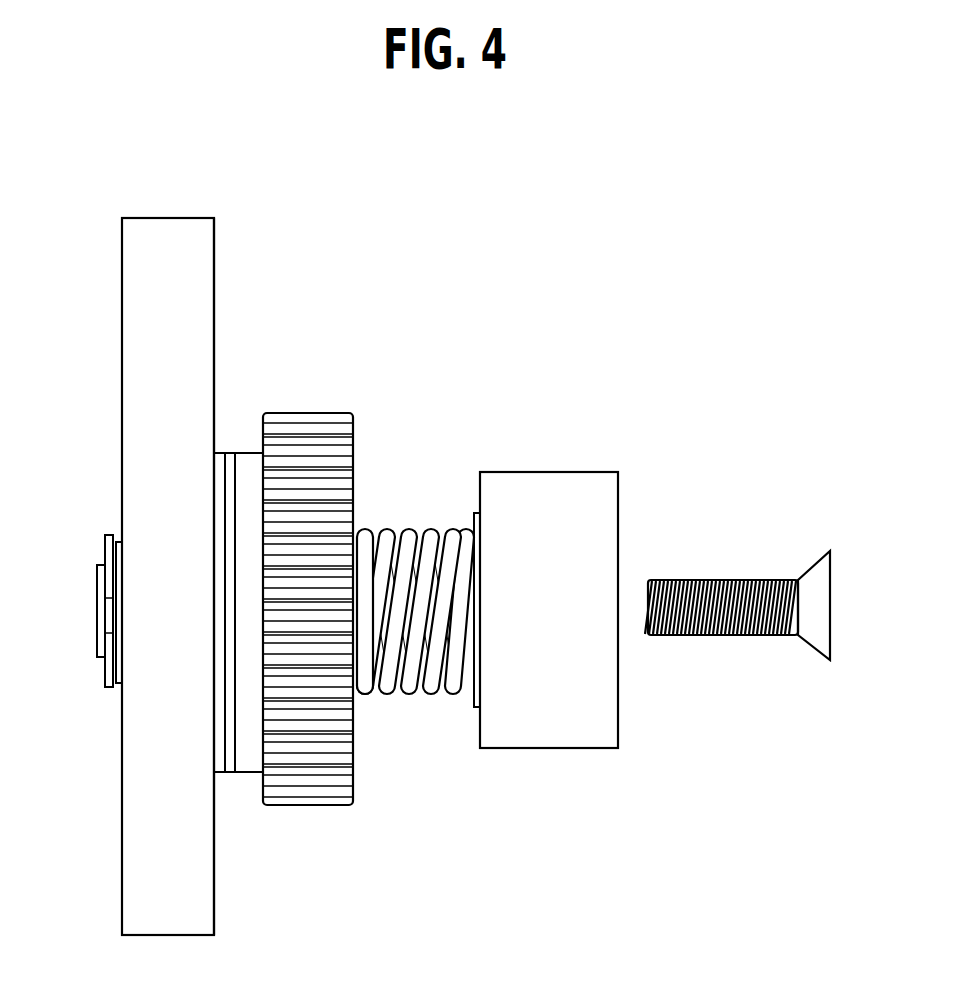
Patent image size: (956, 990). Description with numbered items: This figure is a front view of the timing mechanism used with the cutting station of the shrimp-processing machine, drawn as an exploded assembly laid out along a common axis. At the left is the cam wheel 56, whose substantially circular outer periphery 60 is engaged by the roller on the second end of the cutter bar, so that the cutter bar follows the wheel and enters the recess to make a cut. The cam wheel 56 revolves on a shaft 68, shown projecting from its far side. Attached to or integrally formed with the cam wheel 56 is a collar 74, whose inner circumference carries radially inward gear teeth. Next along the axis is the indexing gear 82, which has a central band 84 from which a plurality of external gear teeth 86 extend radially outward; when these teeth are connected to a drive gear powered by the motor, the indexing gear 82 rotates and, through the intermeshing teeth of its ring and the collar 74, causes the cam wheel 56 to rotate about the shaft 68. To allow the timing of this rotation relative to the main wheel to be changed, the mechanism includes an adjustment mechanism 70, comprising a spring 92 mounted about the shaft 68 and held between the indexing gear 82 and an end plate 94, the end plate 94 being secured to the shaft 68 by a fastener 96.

The outer periphery 60 is at (164, 218).
The cam wheel 56 is at (204, 231).
The shaft 68 is at (100, 612).
The collar 74 is at (226, 453).
The central band 84 is at (244, 455).
The external gear teeth 86 is at (349, 556).
The indexing gear 82 is at (347, 466).
The spring 92 is at (430, 693).
The end plate 94 is at (592, 497).
The adjustment mechanism 70 is at (530, 380).
The fastener 96 is at (820, 583).